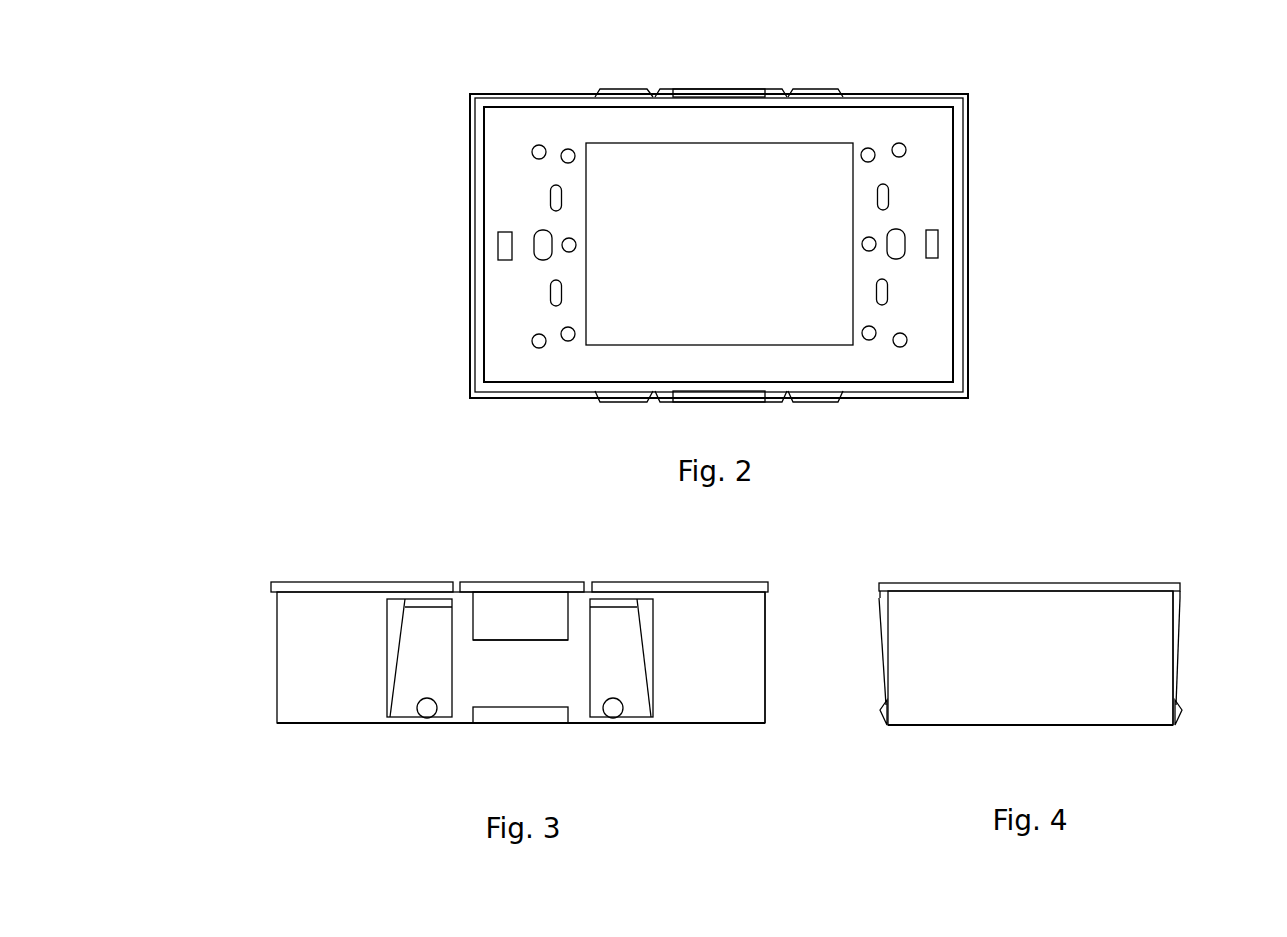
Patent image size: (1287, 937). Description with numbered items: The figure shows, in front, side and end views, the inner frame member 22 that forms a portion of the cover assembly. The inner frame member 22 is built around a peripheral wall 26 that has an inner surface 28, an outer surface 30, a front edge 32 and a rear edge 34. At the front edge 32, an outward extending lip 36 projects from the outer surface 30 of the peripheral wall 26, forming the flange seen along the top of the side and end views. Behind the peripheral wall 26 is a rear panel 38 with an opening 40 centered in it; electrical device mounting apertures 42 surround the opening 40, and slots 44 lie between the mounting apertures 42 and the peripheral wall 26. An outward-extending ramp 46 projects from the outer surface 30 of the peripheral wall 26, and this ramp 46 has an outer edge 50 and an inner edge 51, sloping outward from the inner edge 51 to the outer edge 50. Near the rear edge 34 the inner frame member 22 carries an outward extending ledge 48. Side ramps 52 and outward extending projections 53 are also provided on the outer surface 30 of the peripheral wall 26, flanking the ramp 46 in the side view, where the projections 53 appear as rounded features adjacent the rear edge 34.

In FIG. 2, the inner frame member 22 is at (405, 203).
In FIG. 3, the inner frame member 22 is at (275, 552).
In FIG. 4, the inner frame member 22 is at (1107, 530).
In FIG. 2, the peripheral wall 26 is at (903, 387).
In FIG. 3, the peripheral wall 26 is at (702, 646).
In FIG. 4, the peripheral wall 26 is at (1019, 665).
In FIG. 2, the inner surface 28 is at (938, 306).
In FIG. 2, the outer surface 30 is at (982, 266).
In FIG. 3, the front edge 32 is at (325, 582).
In FIG. 4, the front edge 32 is at (925, 583).
In FIG. 3, the rear edge 34 is at (325, 724).
In FIG. 4, the rear edge 34 is at (938, 726).
In FIG. 2, the outward extending lip 36 is at (967, 372).
In FIG. 3, the outward extending lip 36 is at (770, 583).
In FIG. 4, the outward extending lip 36 is at (1183, 584).
In FIG. 2, the rear panel 38 is at (909, 198).
In FIG. 2, the opening 40 is at (709, 253).
In FIG. 2, the electrical device mounting apertures 42 is at (575, 156).
In FIG. 2, the slots 44 is at (498, 246).
In FIG. 2, the outward-extending ramp 46 is at (722, 88).
In FIG. 3, the outward-extending ramp 46 is at (514, 622).
In FIG. 4, the outward-extending ramp 46 is at (1184, 595).
In FIG. 3, the outward extending ledge 48 is at (520, 716).
In FIG. 4, the outward extending ledge 48 is at (1182, 718).
In FIG. 3, the outer edge 50 is at (523, 583).
In FIG. 3, the inner edge 51 is at (520, 642).
In FIG. 2, the side ramps 52 is at (625, 88).
In FIG. 3, the side ramps 52 is at (412, 665).
In FIG. 4, the side ramps 52 is at (1180, 650).
In FIG. 3, the outward extending projections 53 is at (427, 712).
In FIG. 4, the outward extending projections 53 is at (1182, 708).